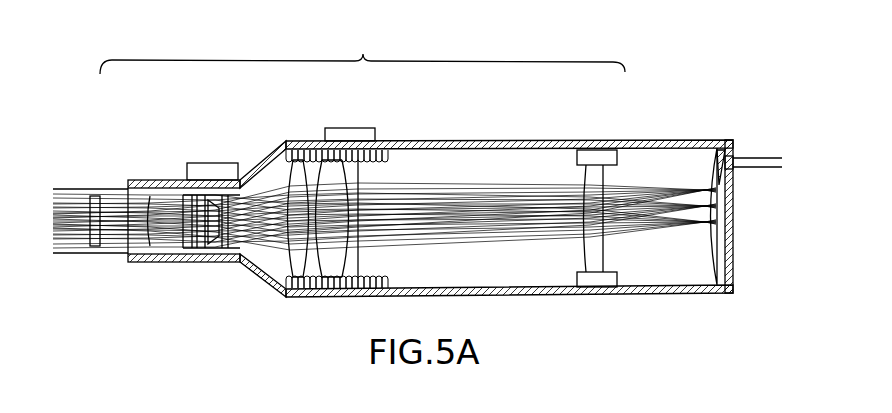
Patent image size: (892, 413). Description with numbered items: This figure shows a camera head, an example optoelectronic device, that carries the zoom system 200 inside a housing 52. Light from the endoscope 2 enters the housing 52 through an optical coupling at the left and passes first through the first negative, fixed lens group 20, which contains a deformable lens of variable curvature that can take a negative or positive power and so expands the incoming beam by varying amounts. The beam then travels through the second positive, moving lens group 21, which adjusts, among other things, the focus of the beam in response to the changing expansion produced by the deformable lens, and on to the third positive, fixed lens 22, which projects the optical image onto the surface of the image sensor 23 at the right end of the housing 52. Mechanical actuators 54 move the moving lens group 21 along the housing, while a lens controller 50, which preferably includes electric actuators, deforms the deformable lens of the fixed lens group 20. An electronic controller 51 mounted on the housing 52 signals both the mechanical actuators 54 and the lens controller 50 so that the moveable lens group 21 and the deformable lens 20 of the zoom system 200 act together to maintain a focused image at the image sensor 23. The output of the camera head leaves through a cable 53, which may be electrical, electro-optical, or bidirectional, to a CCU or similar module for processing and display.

The zoom system 200 is at (362, 54).
The endoscope 2 is at (74, 188).
The first negative, fixed lens group 20 is at (150, 190).
The lens controller 50 is at (222, 163).
The electronic controller 51 is at (350, 128).
The housing 52 is at (550, 141).
The mechanical actuators 54 is at (318, 297).
The second positive, moving lens group 21 is at (358, 172).
The third positive, fixed lens 22 is at (603, 173).
The image sensor 23 is at (712, 190).
The cable 53 is at (772, 158).